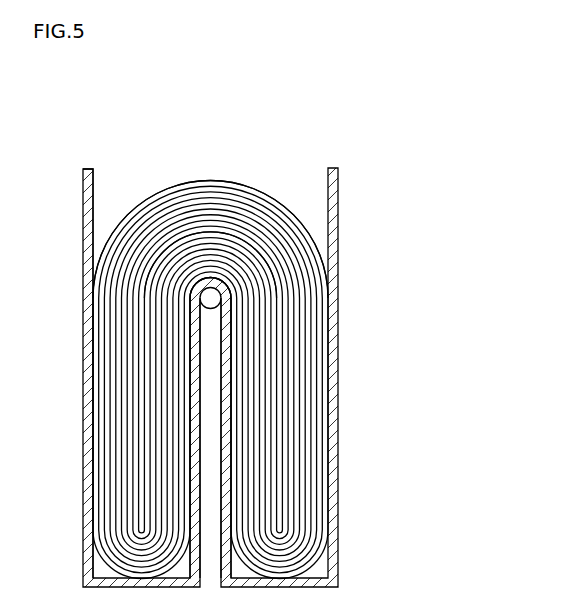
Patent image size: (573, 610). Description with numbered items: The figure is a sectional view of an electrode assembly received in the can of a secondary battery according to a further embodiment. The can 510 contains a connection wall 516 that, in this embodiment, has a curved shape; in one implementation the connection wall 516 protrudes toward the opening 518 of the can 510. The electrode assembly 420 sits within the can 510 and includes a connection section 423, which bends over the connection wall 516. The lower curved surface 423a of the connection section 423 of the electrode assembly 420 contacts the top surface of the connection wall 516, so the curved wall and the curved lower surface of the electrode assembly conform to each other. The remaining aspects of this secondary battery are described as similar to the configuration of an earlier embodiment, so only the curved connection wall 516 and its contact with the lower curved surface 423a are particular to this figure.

The can 510 is at (339, 380).
The connection wall 516 is at (214, 282).
The opening 518 is at (123, 182).
The electrode assembly 420 is at (273, 218).
The connection section 423 is at (243, 189).
The lower curved surface 423a is at (214, 268).